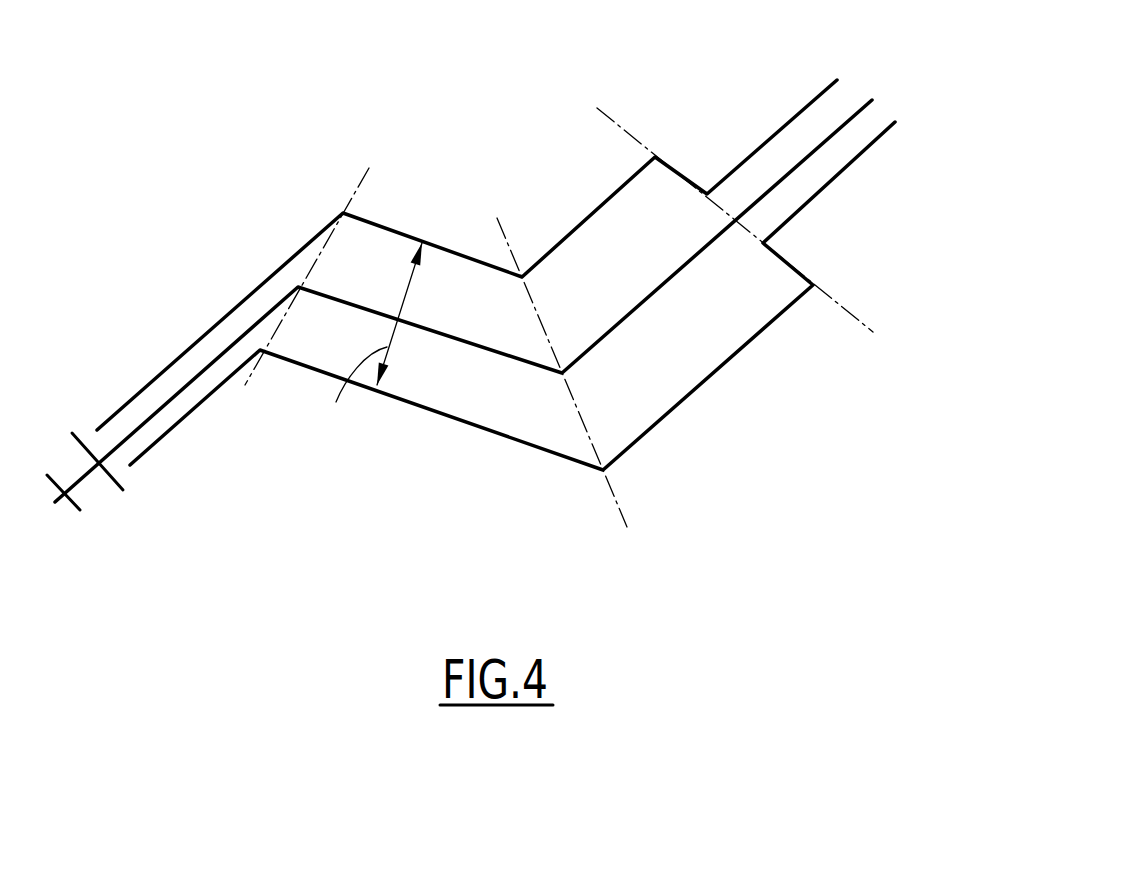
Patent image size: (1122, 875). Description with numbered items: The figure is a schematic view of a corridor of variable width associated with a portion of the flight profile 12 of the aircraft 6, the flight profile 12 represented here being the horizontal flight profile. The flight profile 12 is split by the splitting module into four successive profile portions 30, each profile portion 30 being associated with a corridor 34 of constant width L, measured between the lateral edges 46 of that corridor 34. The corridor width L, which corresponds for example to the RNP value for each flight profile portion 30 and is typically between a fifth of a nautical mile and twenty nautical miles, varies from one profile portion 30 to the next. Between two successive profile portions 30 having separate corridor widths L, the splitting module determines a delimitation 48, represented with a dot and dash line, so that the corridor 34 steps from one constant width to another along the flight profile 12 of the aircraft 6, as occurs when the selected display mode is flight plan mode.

The aircraft 6 is at (101, 500).
The flight profile 12 is at (783, 149).
The profile portion 30 is at (263, 303).
The corridor 34 is at (381, 418).
The lateral edge 46 is at (460, 254).
The delimitation 48 is at (250, 378).